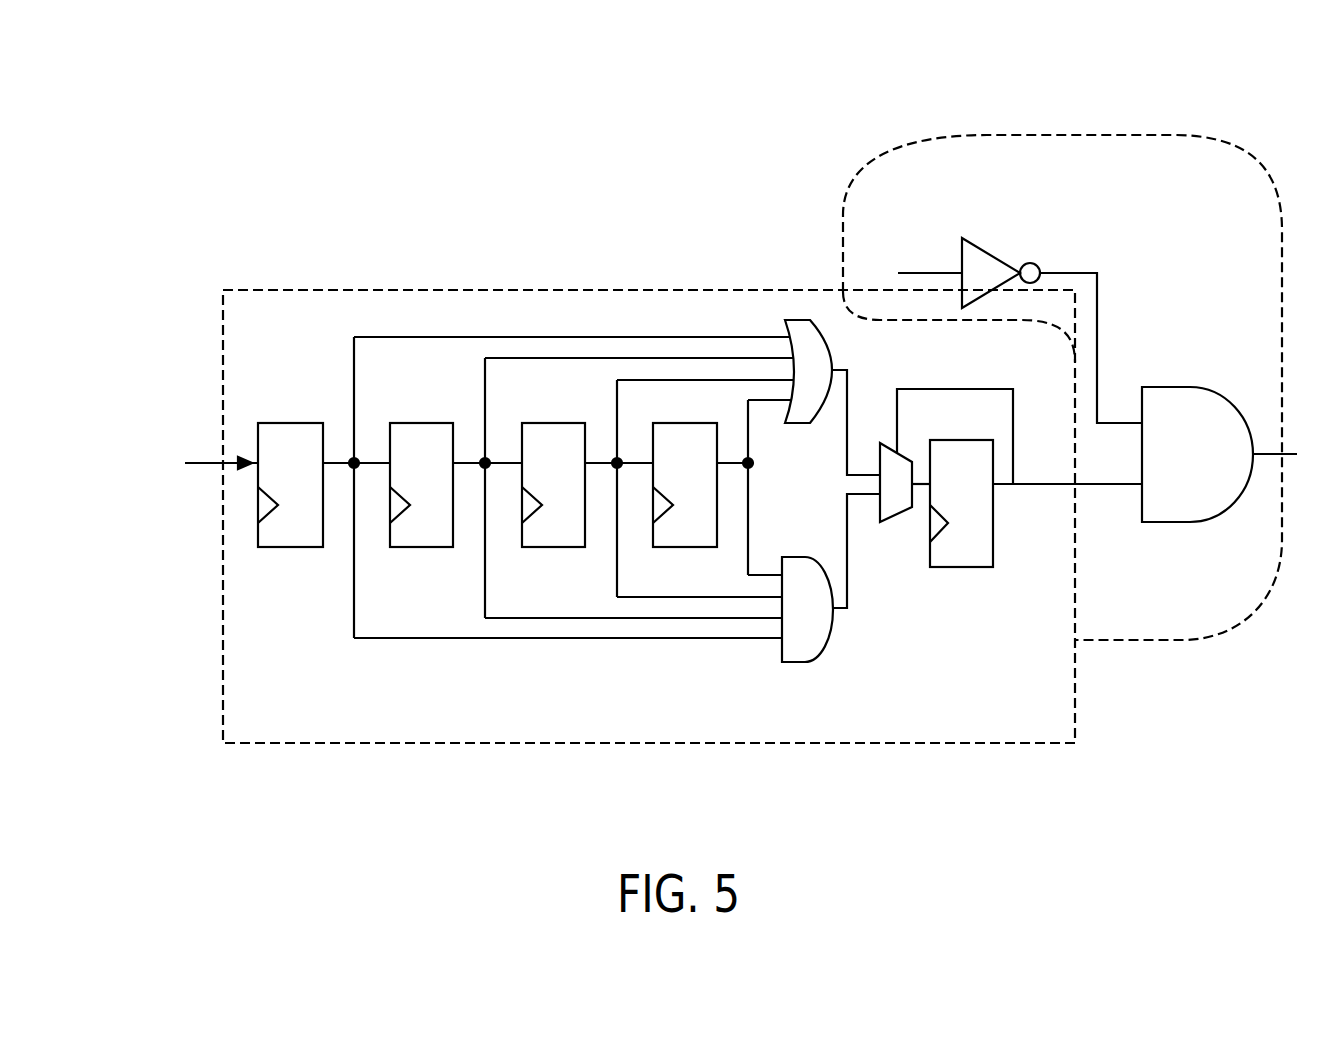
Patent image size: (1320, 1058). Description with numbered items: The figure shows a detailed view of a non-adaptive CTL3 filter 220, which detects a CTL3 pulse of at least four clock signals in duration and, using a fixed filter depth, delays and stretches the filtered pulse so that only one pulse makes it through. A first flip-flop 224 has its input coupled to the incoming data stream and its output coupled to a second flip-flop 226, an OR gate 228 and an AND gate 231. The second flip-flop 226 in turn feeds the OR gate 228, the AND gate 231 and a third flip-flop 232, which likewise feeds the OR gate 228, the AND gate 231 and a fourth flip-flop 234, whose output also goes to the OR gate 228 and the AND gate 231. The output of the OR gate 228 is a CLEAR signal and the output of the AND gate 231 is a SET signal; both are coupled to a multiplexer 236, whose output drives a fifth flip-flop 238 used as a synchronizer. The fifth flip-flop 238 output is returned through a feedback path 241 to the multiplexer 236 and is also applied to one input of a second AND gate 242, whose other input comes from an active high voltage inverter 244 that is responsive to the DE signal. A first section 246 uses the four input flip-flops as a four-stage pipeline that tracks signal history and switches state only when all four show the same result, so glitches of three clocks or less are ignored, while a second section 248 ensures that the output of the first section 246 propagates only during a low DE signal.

The non-adaptive CTL3 filter 220 is at (424, 183).
The first flip-flop 224 is at (300, 422).
The second flip-flop 226 is at (432, 422).
The OR gate 228 is at (823, 418).
The AND gate 231 is at (795, 664).
The third flip-flop 232 is at (562, 422).
The fourth flip-flop 234 is at (694, 422).
The multiplexer 236 is at (898, 514).
The fifth flip-flop 238 is at (963, 568).
The feedback path 241 is at (968, 388).
The second AND gate 242 is at (1168, 523).
The active high voltage inverter 244 is at (997, 258).
The first section 246 is at (321, 759).
The second section 248 is at (1160, 129).